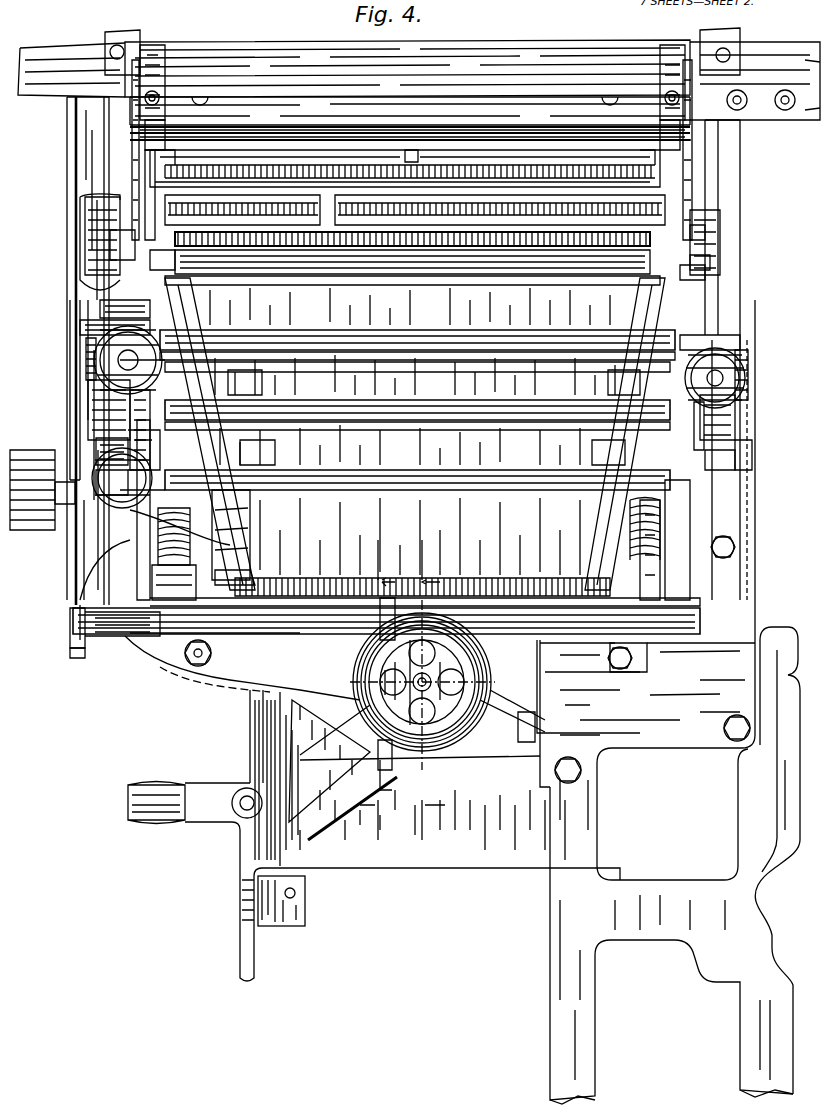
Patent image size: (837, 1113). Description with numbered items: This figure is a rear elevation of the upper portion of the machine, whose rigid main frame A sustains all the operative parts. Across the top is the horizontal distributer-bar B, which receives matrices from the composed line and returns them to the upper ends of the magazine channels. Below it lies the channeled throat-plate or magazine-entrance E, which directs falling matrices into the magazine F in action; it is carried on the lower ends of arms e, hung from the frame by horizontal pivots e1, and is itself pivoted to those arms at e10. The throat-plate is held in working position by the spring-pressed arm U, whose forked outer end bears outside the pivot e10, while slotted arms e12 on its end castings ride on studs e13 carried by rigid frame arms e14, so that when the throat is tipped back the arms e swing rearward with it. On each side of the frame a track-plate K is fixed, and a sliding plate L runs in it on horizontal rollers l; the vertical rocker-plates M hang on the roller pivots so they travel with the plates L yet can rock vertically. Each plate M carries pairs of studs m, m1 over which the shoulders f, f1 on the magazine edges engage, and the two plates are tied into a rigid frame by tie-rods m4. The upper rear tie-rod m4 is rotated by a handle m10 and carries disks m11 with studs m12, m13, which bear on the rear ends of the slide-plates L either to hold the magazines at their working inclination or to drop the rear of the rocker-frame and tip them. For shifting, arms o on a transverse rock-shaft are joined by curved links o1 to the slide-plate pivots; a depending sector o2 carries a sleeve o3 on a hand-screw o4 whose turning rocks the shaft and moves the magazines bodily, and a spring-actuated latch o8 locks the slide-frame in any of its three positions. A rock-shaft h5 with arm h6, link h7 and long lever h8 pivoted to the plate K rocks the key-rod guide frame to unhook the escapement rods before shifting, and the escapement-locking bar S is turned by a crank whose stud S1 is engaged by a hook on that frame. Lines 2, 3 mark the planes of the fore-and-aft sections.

The main frame A is at (85, 168).
The distributer-bar B is at (410, 118).
The throat-plate E is at (472, 160).
The magazine F is at (415, 392).
The arms e is at (130, 142).
The pivots e1 is at (118, 58).
The pivot e10 is at (110, 212).
The arms e12 is at (743, 276).
The studs e13 is at (718, 255).
The rigid arms e14 is at (778, 240).
The arm U is at (115, 232).
The shoulders f is at (200, 338).
The shoulders f1 is at (400, 452).
The studs m is at (205, 392).
The studs m1 is at (152, 440).
The tie-rods m4 is at (80, 312).
The handle m10 is at (265, 372).
The disks m11 is at (744, 405).
The stud m12 is at (88, 360).
The stud m13 is at (96, 448).
The rocker-plates M is at (95, 365).
The track-plate K is at (90, 328).
The sliding plate L is at (85, 400).
The roller l is at (92, 432).
The rock-shaft h5 is at (72, 618).
The arm h6 is at (76, 648).
The link h7 is at (78, 580).
The lever h8 is at (110, 306).
The arms o is at (150, 548).
The curved links o1 is at (90, 388).
The depending arm or sector o2 is at (486, 618).
The sleeve o3 is at (372, 752).
The hand-screw o4 is at (525, 708).
The latch o8 is at (315, 752).
The locking-shaft S is at (220, 565).
The stud S1 is at (218, 580).
The section line 2 is at (426, 828).
The section line 3 is at (374, 828).